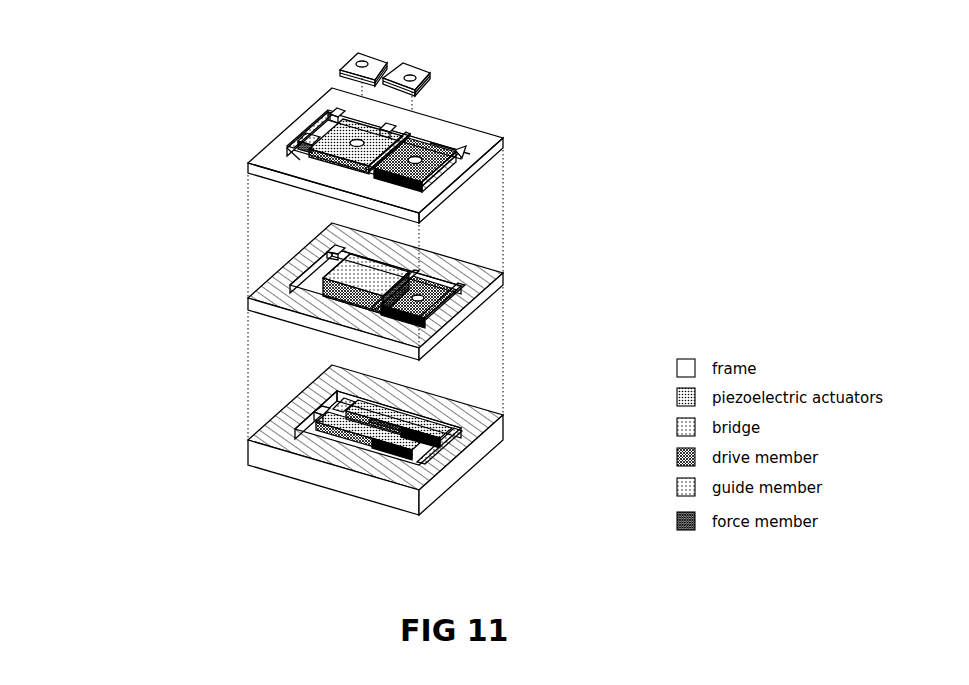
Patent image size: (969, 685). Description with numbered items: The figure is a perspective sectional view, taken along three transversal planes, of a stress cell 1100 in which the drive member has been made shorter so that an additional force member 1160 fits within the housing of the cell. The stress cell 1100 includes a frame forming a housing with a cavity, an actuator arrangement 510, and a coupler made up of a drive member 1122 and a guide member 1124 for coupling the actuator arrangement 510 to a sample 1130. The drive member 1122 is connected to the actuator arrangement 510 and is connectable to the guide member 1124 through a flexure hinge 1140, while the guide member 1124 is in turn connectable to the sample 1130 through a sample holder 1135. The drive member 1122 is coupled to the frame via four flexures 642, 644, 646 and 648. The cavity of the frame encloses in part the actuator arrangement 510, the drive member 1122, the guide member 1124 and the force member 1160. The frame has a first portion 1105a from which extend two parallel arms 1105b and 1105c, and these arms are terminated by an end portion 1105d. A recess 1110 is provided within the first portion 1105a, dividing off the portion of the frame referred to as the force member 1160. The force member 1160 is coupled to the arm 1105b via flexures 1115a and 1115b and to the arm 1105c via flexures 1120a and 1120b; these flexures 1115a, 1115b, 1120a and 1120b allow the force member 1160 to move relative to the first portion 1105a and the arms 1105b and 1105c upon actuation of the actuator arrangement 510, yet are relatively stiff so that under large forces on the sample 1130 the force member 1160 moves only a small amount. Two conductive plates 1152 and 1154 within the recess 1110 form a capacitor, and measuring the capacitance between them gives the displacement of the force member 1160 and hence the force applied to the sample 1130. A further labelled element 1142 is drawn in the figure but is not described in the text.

The stress cell 1100 is at (88, 86).
The recess 1110 is at (470, 160).
The first portion of the frame 1105a is at (437, 175).
The arm 1105b is at (450, 135).
The arm 1105c is at (300, 167).
The end portion 1105d is at (300, 140).
The flexure 1115a is at (410, 128).
The flexure 1115b is at (467, 150).
The flexure 1120a is at (373, 155).
The flexure 1120b is at (387, 170).
The drive member 1122 is at (322, 118).
The guide member 1124 is at (300, 170).
The sample 1130 is at (388, 66).
The sample holder 1135 is at (342, 64).
The flexure hinge 1140 is at (290, 138).
The post 1142 is at (313, 420).
The conductive plate 1152 is at (453, 133).
The conductive plate 1154 is at (437, 173).
The force member 1160 is at (420, 140).
The flexure 642 is at (440, 262).
The flexure 644 is at (337, 275).
The flexure 646 is at (323, 332).
The flexure 648 is at (323, 287).
The actuator arrangement 510 is at (430, 482).